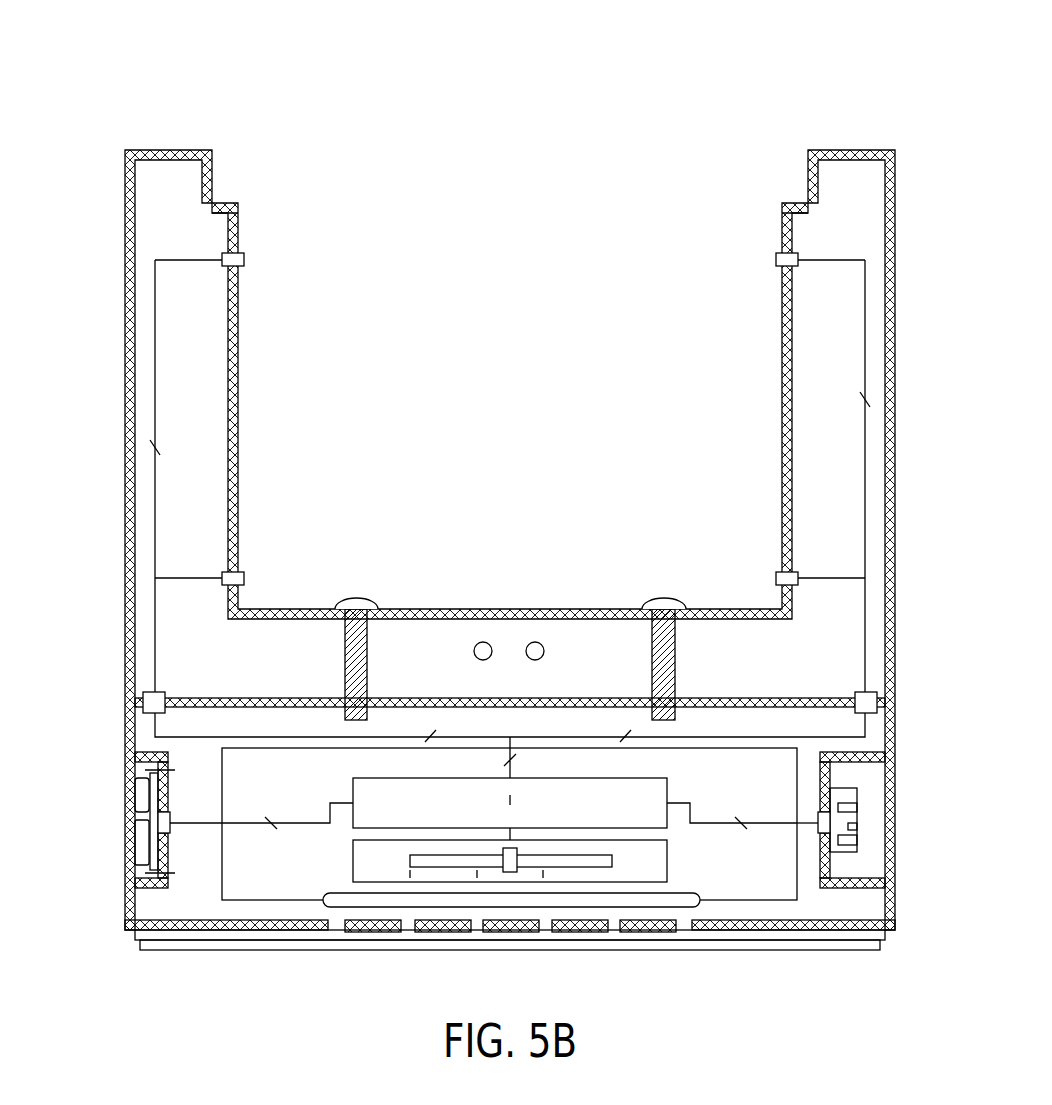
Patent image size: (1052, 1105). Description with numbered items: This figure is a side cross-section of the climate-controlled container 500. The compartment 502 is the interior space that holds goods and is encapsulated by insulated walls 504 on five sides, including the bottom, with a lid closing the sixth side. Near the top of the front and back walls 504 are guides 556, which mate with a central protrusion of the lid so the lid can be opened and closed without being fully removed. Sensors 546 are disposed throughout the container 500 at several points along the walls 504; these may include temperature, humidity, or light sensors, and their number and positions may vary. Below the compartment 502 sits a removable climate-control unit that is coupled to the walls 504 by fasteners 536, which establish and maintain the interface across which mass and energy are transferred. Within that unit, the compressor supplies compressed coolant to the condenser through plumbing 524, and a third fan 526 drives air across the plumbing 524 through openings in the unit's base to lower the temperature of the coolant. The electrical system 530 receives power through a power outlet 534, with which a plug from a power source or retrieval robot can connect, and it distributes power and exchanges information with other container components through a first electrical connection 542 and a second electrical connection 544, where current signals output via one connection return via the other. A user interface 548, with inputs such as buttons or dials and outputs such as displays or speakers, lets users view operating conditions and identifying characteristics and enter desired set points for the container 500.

The climate-controlled container 500 is at (96, 90).
The compartment 502 is at (472, 300).
The walls 504 is at (125, 433).
The plumbing 524 is at (697, 897).
The third fan 526 is at (608, 870).
The electrical system 530 is at (655, 788).
The power outlet 534 is at (896, 790).
The fasteners 536 is at (355, 598).
The first electrical connection 542 is at (160, 692).
The second electrical connection 544 is at (857, 692).
The sensors 546 is at (246, 259).
The user interface 548 is at (108, 828).
The guides 556 is at (238, 212).